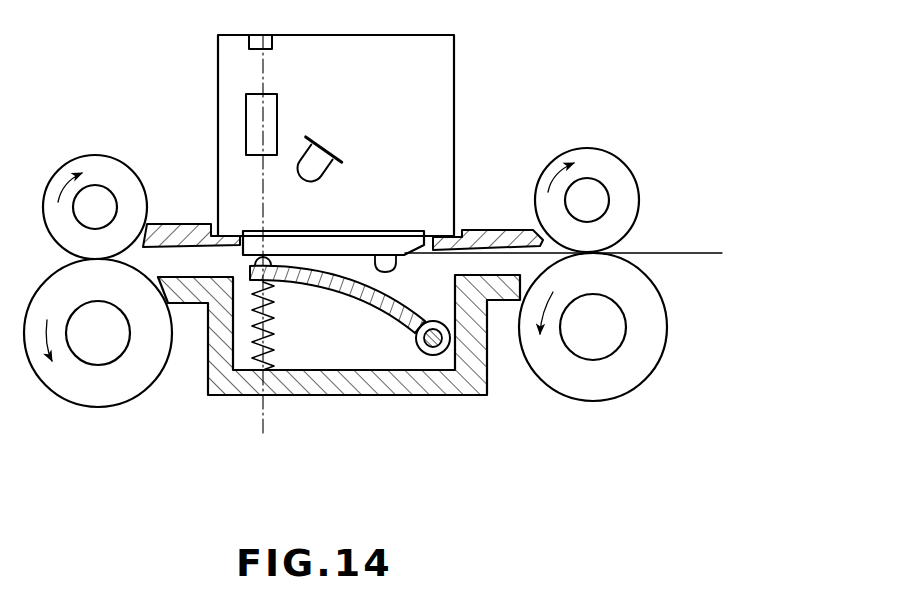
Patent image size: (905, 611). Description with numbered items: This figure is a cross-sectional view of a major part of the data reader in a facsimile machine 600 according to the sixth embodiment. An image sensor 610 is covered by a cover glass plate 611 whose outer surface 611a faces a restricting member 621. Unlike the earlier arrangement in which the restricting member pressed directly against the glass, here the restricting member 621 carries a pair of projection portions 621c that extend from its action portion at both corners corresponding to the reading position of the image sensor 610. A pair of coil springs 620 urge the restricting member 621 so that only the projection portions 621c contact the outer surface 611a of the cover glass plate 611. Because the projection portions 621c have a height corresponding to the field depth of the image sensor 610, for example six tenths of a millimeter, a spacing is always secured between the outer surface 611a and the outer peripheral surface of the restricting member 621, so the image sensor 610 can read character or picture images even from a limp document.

The facsimile machine 600 is at (566, 107).
The image sensor 610 is at (204, 113).
The cover glass plate 611 is at (370, 238).
The outer surface of cover glass plate 611a is at (403, 257).
The coil springs 620 is at (252, 330).
The restricting member 621 is at (369, 308).
The projection portions 621c is at (208, 305).